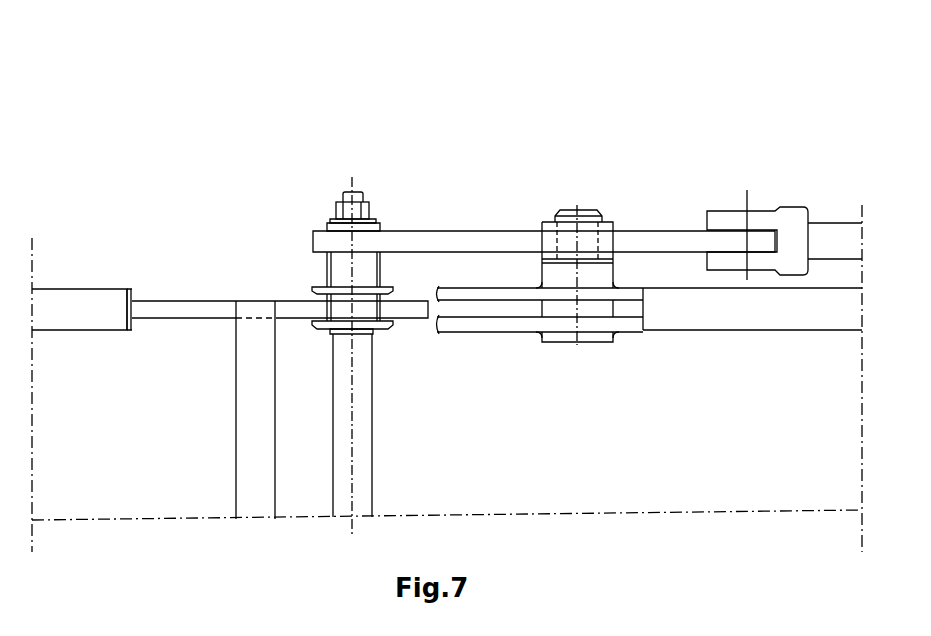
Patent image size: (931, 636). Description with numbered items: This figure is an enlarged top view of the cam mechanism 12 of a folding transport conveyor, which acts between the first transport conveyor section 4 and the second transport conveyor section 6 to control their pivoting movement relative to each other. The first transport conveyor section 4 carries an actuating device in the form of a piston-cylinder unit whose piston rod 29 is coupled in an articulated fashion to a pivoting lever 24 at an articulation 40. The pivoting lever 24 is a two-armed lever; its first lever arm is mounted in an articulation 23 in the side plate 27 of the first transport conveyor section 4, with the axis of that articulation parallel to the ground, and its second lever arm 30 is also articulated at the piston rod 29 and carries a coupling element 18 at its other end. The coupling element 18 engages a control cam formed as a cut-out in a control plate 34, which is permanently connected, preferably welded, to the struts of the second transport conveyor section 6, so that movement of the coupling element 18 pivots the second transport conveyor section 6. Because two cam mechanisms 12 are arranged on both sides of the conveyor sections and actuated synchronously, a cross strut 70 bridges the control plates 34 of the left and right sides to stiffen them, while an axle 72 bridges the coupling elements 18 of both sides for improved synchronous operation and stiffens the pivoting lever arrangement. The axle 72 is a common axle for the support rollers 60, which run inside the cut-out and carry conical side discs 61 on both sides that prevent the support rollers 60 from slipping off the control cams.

The first transport conveyor section 4 is at (803, 305).
The second transport conveyor section 6 is at (77, 308).
The cam mechanism 12 is at (352, 122).
The coupling element 18 is at (403, 253).
The articulation 23 is at (608, 172).
The pivoting lever 24 is at (656, 207).
The side plate 27 is at (495, 327).
The piston rod 29 is at (840, 242).
The second lever arm 30 is at (500, 240).
The control plate 34 is at (170, 308).
The articulation 40 is at (747, 197).
The support rollers 60 is at (338, 307).
The conical side discs 61 is at (322, 289).
The cross strut 70 is at (255, 413).
The axle 72 is at (362, 438).